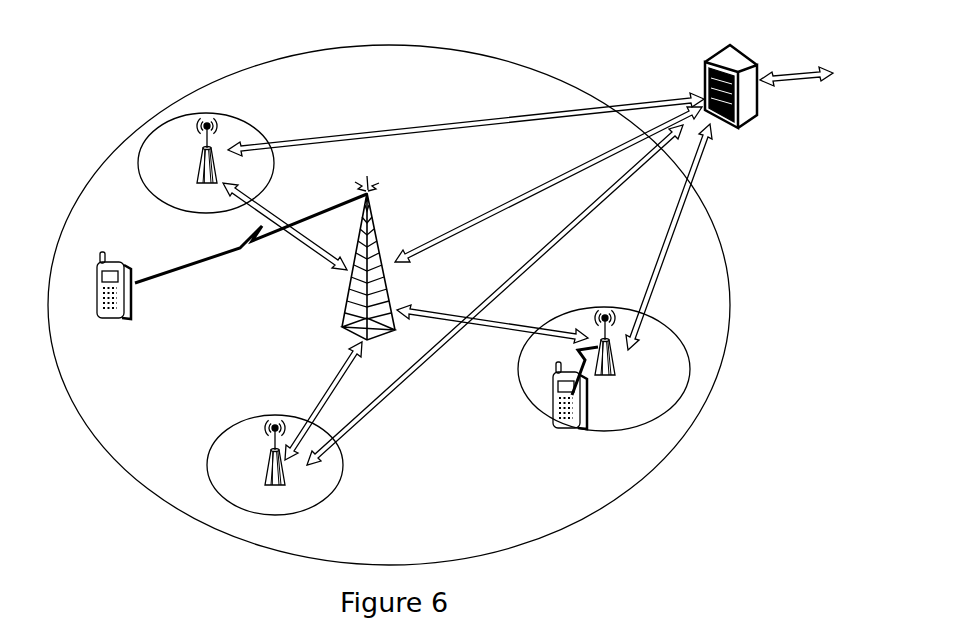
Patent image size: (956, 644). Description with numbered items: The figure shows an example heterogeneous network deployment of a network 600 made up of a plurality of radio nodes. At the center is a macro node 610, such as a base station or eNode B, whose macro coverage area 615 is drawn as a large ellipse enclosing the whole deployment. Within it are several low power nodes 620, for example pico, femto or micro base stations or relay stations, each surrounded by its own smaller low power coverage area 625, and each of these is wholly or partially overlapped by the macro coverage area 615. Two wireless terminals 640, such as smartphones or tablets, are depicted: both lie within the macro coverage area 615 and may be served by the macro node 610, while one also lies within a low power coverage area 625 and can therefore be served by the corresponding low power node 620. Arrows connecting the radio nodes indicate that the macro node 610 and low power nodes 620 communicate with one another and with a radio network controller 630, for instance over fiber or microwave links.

The network 600 is at (185, 75).
The macro node 610 is at (380, 243).
The macro coverage area 615 is at (388, 60).
The low power node 620 is at (213, 163).
The low power coverage area 625 is at (165, 188).
The radio network controller 630 is at (769, 105).
The wireless terminal 640 is at (344, 329).